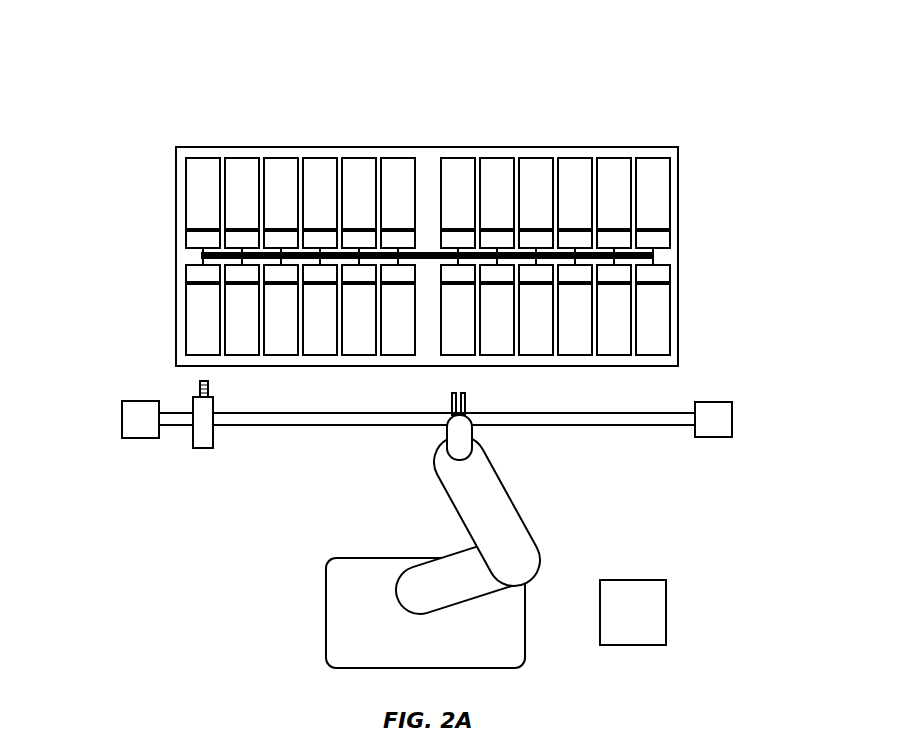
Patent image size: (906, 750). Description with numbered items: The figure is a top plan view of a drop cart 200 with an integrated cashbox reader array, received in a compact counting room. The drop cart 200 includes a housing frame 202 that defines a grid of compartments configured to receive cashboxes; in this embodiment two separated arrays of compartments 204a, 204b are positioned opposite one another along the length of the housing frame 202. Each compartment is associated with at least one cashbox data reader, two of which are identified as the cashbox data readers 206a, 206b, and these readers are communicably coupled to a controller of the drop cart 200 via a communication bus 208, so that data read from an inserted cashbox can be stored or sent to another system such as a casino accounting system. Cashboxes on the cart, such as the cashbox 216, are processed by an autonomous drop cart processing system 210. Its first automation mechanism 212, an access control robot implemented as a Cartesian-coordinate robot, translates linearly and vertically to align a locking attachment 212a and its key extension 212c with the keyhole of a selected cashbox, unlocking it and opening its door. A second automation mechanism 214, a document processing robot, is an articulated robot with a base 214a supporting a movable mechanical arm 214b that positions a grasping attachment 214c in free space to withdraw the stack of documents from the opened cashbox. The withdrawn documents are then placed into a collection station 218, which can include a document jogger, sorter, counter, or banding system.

The drop cart 200 is at (165, 62).
The housing frame 202 is at (222, 147).
The array of compartments 204a is at (690, 158).
The array of compartments 204b is at (690, 285).
The cashbox data reader 206a is at (678, 237).
The cashbox data reader 206b is at (678, 270).
The communication bus 208 is at (422, 253).
The autonomous drop cart processing system 210 is at (105, 366).
The first automation mechanism 212 is at (740, 390).
The locking attachment 212a is at (202, 448).
The key extension 212c is at (208, 384).
The second automation mechanism 214 is at (548, 435).
The base 214a is at (326, 612).
The movable mechanical arm 214b is at (437, 550).
The grasping attachment 214c is at (465, 393).
The cashbox 216 is at (177, 298).
The collection station 218 is at (666, 608).